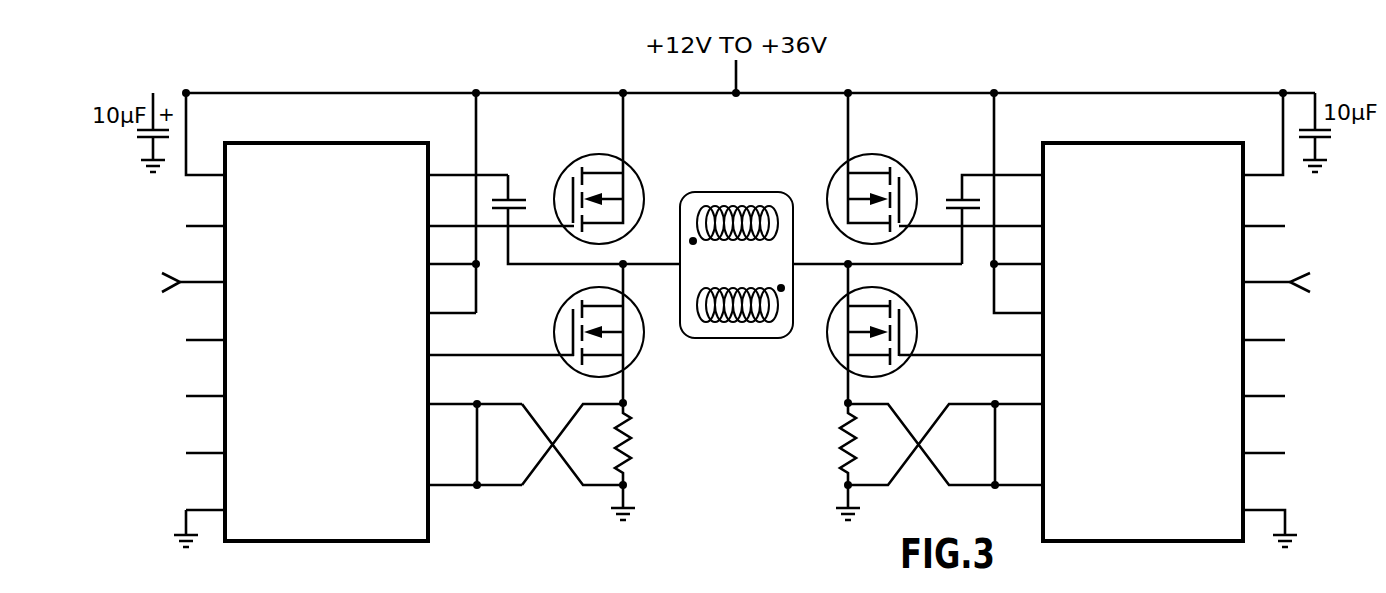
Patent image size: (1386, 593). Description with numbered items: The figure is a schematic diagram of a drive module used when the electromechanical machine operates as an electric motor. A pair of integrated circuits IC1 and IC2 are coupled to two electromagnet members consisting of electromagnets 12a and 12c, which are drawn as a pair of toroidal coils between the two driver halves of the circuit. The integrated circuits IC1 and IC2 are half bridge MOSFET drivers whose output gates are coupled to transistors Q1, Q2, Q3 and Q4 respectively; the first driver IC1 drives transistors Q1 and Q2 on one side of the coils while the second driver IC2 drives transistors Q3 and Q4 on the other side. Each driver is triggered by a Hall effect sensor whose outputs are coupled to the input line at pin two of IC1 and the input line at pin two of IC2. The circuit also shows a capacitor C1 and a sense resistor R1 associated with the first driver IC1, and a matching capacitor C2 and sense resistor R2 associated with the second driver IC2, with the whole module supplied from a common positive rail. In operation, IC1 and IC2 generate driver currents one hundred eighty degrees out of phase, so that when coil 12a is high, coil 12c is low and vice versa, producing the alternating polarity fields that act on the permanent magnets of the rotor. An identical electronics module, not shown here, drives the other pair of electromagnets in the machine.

The electromagnet 12a is at (738, 206).
The electromagnet 12c is at (738, 322).
The integrated circuit IC1 is at (329, 330).
The integrated circuit IC2 is at (1139, 330).
The transistor Q1 is at (607, 168).
The transistor Q2 is at (611, 333).
The transistor Q3 is at (857, 168).
The transistor Q4 is at (858, 333).
The bootstrap capacitor C1 is at (586, 219).
The bootstrap capacitor C2 is at (983, 219).
The sense resistor R1 is at (638, 456).
The sense resistor R2 is at (832, 456).